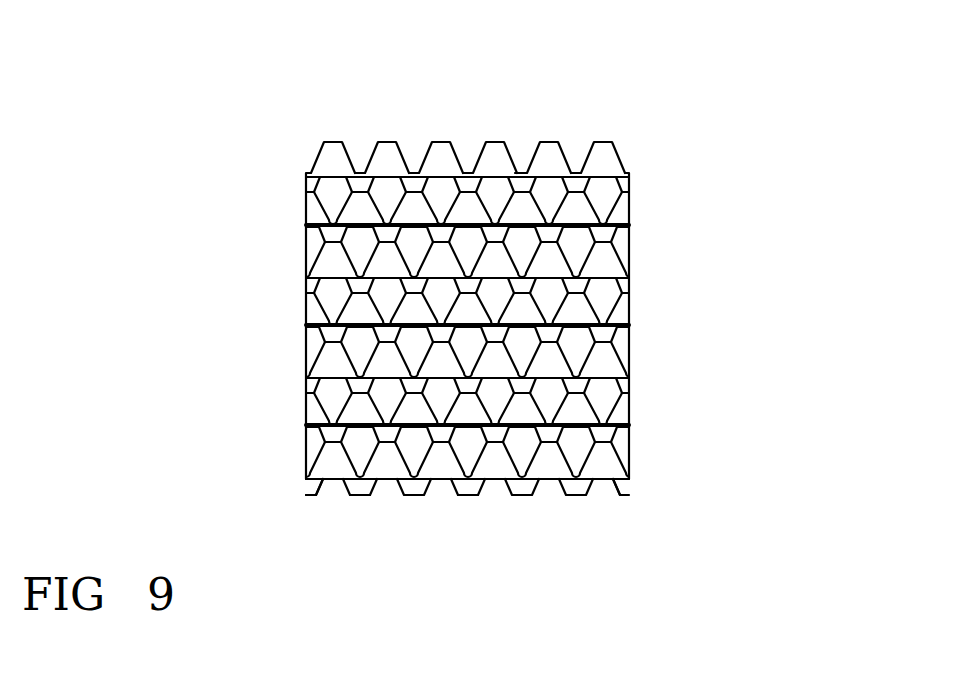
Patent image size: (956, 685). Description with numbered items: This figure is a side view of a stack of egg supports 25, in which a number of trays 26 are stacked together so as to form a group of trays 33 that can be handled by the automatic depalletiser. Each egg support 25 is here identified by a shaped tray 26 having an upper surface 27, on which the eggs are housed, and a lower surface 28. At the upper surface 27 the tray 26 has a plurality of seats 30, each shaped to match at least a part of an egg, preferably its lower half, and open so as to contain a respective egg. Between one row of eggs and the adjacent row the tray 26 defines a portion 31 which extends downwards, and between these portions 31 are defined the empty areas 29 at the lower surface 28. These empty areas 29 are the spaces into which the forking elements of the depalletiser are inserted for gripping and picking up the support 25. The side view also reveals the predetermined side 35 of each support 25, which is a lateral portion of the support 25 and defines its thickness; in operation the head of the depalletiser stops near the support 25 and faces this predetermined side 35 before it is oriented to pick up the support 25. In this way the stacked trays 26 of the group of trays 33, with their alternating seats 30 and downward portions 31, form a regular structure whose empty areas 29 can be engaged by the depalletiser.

The egg support 25 is at (652, 248).
The tray 26 is at (632, 327).
The upper surface 27 is at (473, 112).
The lower surface 28 is at (547, 510).
The empty areas 29 is at (335, 497).
The seats 30 is at (360, 155).
The portion 31 is at (308, 492).
The group of trays 33 is at (230, 302).
The predetermined side 35 is at (627, 533).